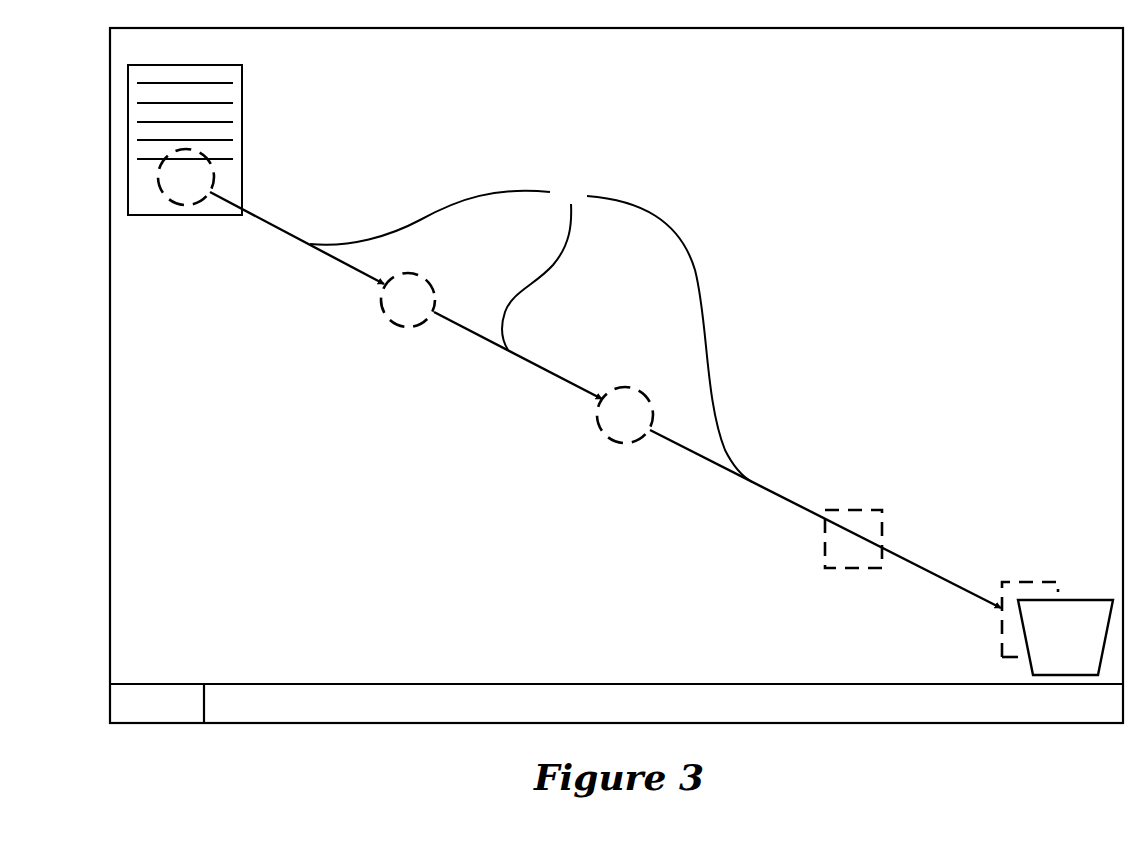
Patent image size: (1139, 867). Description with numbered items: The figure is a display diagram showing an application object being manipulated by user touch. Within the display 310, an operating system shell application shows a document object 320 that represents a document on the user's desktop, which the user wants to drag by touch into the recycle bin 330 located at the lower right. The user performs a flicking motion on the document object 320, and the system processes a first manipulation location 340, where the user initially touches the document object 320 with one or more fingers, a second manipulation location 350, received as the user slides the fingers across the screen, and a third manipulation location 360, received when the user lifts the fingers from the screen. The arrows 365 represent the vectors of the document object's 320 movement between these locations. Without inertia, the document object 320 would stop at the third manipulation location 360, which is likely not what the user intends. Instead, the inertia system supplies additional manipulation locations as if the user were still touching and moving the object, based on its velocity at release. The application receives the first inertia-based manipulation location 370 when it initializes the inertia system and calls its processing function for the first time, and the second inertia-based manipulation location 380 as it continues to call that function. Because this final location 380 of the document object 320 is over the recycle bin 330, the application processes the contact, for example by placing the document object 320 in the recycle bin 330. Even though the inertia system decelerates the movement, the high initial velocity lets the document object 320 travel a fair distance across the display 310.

The display 310 is at (617, 364).
The document object 320 is at (185, 127).
The recycle bin 330 is at (1096, 600).
The first manipulation location 340 is at (183, 205).
The second manipulation location 350 is at (384, 312).
The third manipulation location 360 is at (600, 425).
The arrows 365 is at (531, 332).
The first inertia-based manipulation location 370 is at (858, 510).
The second inertia-based manipulation location 380 is at (1012, 582).